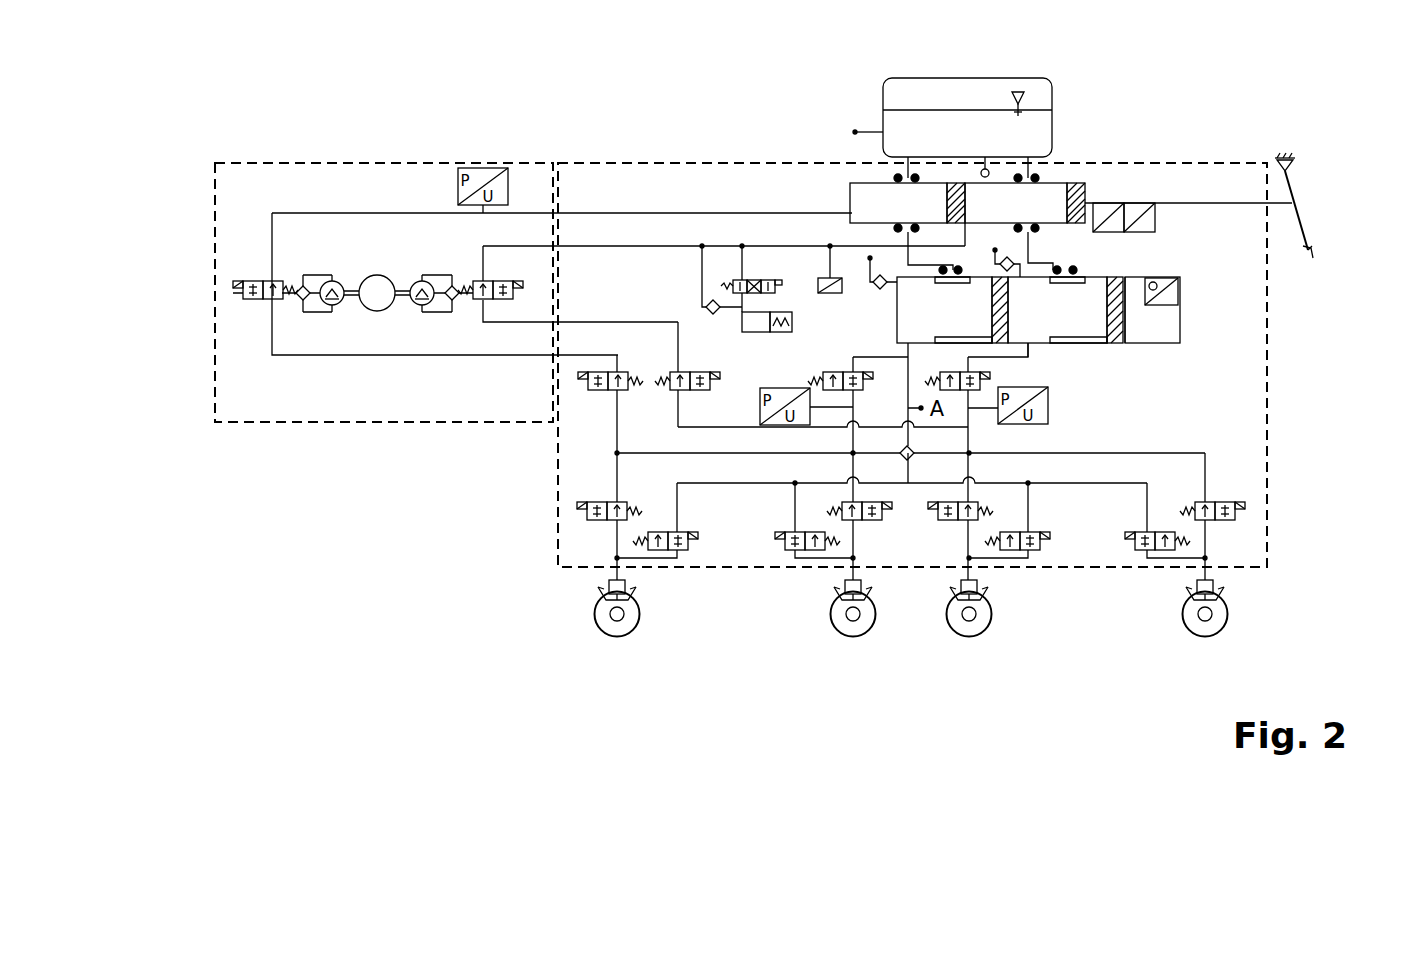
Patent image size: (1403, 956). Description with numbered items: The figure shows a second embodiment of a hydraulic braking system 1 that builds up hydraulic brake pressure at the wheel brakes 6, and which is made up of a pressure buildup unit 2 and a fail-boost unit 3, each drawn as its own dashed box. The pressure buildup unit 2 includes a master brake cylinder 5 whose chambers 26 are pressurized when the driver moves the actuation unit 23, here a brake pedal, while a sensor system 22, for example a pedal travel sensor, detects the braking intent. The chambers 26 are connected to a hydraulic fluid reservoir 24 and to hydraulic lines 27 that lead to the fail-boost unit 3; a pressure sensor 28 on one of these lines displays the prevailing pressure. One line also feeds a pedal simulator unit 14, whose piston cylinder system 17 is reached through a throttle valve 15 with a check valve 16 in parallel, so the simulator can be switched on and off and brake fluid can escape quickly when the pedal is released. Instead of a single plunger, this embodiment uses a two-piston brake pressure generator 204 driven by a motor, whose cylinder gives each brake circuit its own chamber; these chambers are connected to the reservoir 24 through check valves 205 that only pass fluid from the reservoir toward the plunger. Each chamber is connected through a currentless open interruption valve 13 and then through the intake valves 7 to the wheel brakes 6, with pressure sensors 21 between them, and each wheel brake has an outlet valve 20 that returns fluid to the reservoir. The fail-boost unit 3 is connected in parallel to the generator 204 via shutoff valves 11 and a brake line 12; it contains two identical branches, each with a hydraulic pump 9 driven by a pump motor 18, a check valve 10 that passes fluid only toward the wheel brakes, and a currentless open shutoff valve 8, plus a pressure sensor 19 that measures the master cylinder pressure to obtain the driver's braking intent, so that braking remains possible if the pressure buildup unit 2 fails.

The hydraulic braking system 1 is at (552, 128).
The pressure buildup unit 2 is at (549, 584).
The fail-boost unit 3 is at (299, 436).
The master brake cylinder 5 is at (967, 193).
The wheel brake 6 is at (617, 637).
The intake valve 7 is at (577, 508).
The shutoff valve 8 is at (233, 295).
The hydraulic pump 9 is at (332, 305).
The check valve 10 is at (300, 285).
The shutoff valve 11 is at (588, 378).
The brake line 12 is at (617, 435).
The interruption valve 13 is at (830, 372).
The pedal simulator unit 14 is at (790, 292).
The throttle valve 15 is at (757, 280).
The check valve 16 is at (705, 306).
The piston cylinder system 17 is at (742, 325).
The pump motor 18 is at (372, 276).
The pressure sensor 19 is at (458, 184).
The outlet valve 20 is at (699, 548).
The brake pressure sensor 21 is at (760, 406).
The sensor system 22 is at (1140, 232).
The actuation unit 23 is at (1285, 157).
The hydraulic fluid reservoir 24 is at (981, 78).
The chamber 26 is at (866, 193).
The hydraulic line 27 is at (603, 258).
The pressure sensor 28 is at (820, 277).
The brake pressure generator 204 is at (1116, 362).
The check valve 205 is at (880, 289).